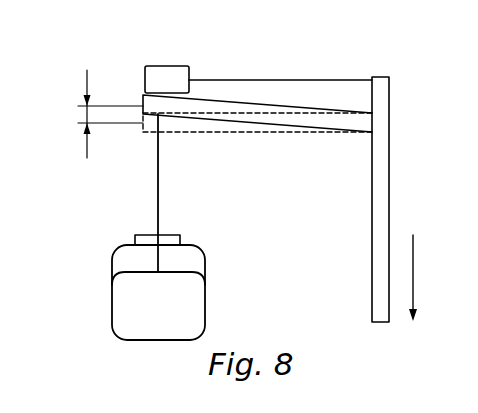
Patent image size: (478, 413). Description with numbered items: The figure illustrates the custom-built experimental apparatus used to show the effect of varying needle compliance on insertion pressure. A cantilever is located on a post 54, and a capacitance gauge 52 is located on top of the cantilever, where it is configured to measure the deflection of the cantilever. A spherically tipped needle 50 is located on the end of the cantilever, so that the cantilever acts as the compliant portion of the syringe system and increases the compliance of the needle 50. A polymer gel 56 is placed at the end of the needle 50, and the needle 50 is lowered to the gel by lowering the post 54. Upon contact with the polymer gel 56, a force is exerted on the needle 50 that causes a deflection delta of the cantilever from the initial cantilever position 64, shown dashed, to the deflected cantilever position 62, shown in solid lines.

The needle 50 is at (158, 193).
The capacitance gauge 52 is at (167, 71).
The post 54 is at (383, 190).
The polymer gel 56 is at (187, 300).
The deflected cantilever position 62 is at (215, 102).
The initial cantilever position 64 is at (198, 132).
The deflection delta is at (82, 115).